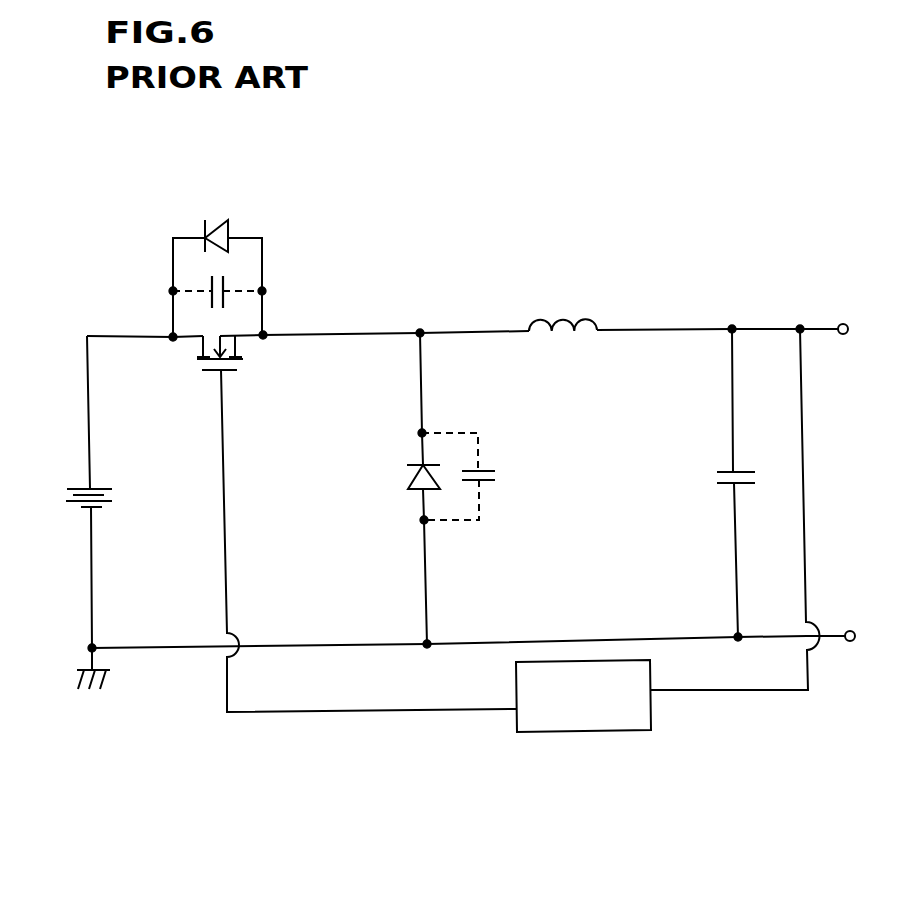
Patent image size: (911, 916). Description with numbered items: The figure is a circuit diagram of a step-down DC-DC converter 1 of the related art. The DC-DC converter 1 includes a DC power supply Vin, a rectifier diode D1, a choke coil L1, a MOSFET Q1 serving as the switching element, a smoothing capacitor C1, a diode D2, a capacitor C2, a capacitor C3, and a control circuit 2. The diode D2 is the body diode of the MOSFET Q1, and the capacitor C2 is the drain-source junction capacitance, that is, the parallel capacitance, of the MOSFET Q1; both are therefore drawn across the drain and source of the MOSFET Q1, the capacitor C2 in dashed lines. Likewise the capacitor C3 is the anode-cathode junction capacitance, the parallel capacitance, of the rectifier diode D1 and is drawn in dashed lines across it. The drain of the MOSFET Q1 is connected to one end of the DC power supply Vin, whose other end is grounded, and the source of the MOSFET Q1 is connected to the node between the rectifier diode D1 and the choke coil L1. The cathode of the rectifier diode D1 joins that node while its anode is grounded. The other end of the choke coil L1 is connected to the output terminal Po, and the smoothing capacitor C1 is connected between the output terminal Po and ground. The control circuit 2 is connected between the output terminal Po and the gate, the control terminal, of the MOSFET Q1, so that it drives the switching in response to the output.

The DC-DC converter 1 is at (780, 228).
The control circuit 2 is at (650, 710).
The DC power supply Vin is at (68, 480).
The MOSFET Q1 is at (356, 524).
The diode D2 is at (243, 278).
The capacitor C2 is at (239, 292).
The rectifier diode D1 is at (401, 488).
The capacitor C3 is at (476, 475).
The choke coil L1 is at (563, 302).
The smoothing capacitor C1 is at (749, 483).
The output terminal Po is at (840, 465).